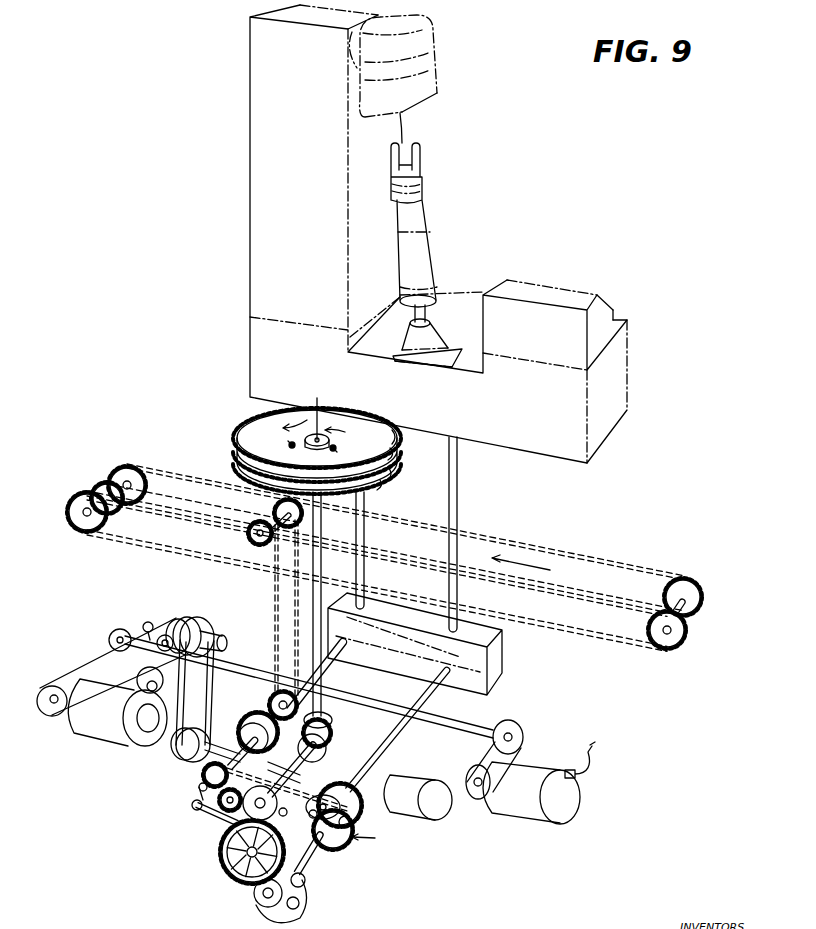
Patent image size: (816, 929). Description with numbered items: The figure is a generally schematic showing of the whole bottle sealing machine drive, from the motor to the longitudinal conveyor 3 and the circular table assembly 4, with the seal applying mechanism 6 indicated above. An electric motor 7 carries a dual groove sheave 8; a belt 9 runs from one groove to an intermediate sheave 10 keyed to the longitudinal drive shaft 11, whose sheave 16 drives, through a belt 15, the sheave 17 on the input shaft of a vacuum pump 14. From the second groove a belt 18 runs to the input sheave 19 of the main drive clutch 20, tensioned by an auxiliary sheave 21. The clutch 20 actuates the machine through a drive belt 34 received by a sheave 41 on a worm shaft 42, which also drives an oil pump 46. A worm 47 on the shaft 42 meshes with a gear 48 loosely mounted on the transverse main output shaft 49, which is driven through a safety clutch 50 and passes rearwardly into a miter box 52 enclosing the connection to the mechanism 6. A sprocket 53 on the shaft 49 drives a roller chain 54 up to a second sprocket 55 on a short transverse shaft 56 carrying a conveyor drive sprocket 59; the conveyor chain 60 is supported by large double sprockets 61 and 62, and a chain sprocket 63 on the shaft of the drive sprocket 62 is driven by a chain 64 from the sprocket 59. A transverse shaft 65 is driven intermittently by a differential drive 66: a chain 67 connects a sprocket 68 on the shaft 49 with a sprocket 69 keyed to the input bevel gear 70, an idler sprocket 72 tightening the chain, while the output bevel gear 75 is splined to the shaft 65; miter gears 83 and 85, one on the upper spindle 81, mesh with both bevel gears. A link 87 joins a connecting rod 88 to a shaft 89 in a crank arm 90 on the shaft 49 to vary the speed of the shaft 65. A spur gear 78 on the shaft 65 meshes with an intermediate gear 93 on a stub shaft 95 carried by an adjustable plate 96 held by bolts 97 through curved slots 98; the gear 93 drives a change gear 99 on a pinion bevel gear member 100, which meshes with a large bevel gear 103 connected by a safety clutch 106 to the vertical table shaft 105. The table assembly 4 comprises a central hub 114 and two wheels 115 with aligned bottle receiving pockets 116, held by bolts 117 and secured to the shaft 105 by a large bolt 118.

The longitudinal conveyor 3 is at (705, 625).
The circular table assembly 4 is at (234, 426).
The seal applying mechanism 6 is at (449, 71).
The electric motor 7 is at (116, 733).
The dual groove sheave 8 is at (55, 708).
The belt 9 is at (88, 654).
The intermediate sheave 10 is at (118, 638).
The longitudinal drive shaft 11 is at (378, 706).
The vacuum pump 14 is at (524, 815).
The belt 15 is at (480, 750).
The sheave 16 is at (522, 729).
The sheave 17 is at (482, 798).
The belt 18 is at (145, 625).
The input sheave 19 is at (159, 645).
The main drive clutch 20 is at (216, 619).
The auxiliary sheave 21 is at (155, 673).
The drive belt 34 is at (212, 708).
The sheave 41 is at (187, 763).
The worm shaft 42 is at (243, 736).
The oil pump 46 is at (415, 818).
The worm 47 is at (268, 755).
The gear 48 is at (250, 720).
The main output shaft 49 is at (347, 648).
The safety clutch 50 is at (269, 705).
The miter box 52 is at (503, 664).
The sprocket 53 is at (298, 690).
The roller chain 54 is at (275, 590).
The second sprocket 55 is at (280, 512).
The transverse shaft 56 is at (277, 518).
The conveyor drive sprocket 59 is at (257, 543).
The conveyor chain 60 is at (563, 588).
The double sprocket 61 is at (677, 590).
The double sprocket 62 is at (122, 477).
The chain sprocket 63 is at (112, 518).
The chain 64 is at (190, 503).
The transverse shaft 65 is at (390, 756).
The differential drive 66 is at (371, 839).
The chain 67 is at (284, 810).
The sprocket 68 is at (205, 777).
The sprocket 69 is at (356, 803).
The bevel gear 70 is at (351, 823).
The idler sprocket 72 is at (247, 787).
The bevel gear 75 is at (312, 870).
The spur gear 78 is at (262, 904).
The spindle 81 is at (323, 795).
The miter gear 83 is at (311, 811).
The miter gear 85 is at (340, 846).
The link 87 is at (218, 824).
The connecting rod 88 is at (335, 858).
The shaft 89 is at (193, 810).
The crank arm 90 is at (199, 798).
The intermediate gear 93 is at (235, 872).
The stub shaft 95 is at (236, 856).
The plate 96 is at (280, 910).
The bolts 97 is at (302, 886).
The curved slots 98 is at (298, 907).
The change gear 99 is at (275, 815).
The pinion bevel gear member 100 is at (304, 742).
The bevel gear 103 is at (330, 718).
The table shaft 105 is at (320, 683).
The safety clutch 106 is at (330, 732).
The central hub 114 is at (315, 450).
The wheels 115 is at (386, 476).
The bottle receiving pockets 116 is at (373, 485).
The bolts 117 is at (336, 445).
The bolt 118 is at (326, 413).